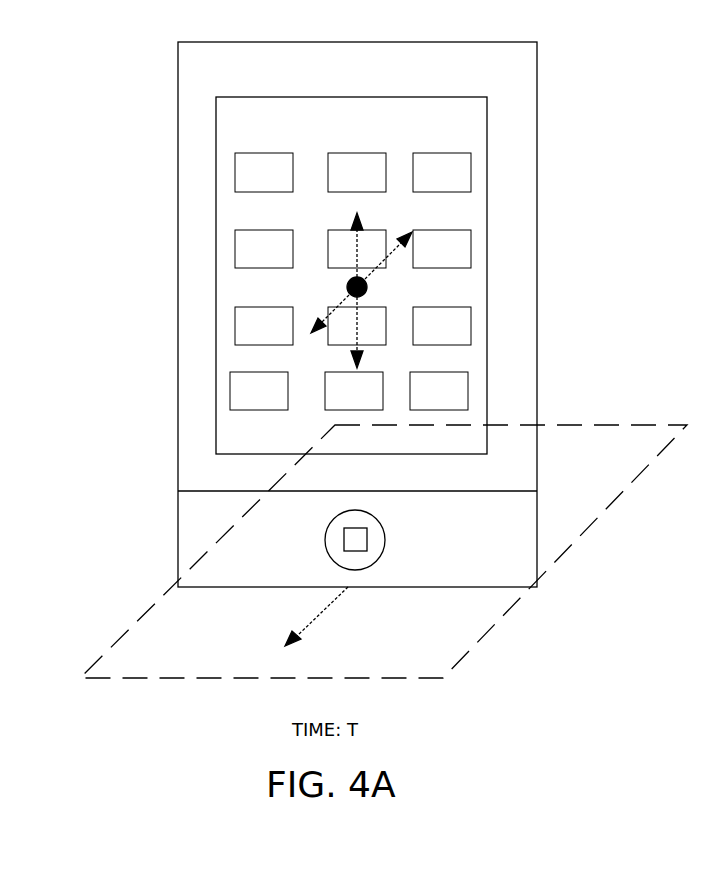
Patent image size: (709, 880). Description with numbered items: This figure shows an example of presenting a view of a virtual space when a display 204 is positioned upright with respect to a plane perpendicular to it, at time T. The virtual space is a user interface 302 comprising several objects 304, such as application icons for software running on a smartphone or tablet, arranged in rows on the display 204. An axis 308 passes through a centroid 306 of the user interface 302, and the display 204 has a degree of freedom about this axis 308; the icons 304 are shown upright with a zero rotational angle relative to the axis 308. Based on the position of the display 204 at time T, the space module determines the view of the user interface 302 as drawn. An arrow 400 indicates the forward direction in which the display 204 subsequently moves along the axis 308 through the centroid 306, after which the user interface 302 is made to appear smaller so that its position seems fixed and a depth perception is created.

The display 204 is at (538, 77).
The user interface 302 is at (498, 99).
The objects 304 is at (264, 152).
The centroid 306 is at (368, 287).
The axis 308 is at (355, 362).
The arrow 400 is at (320, 614).